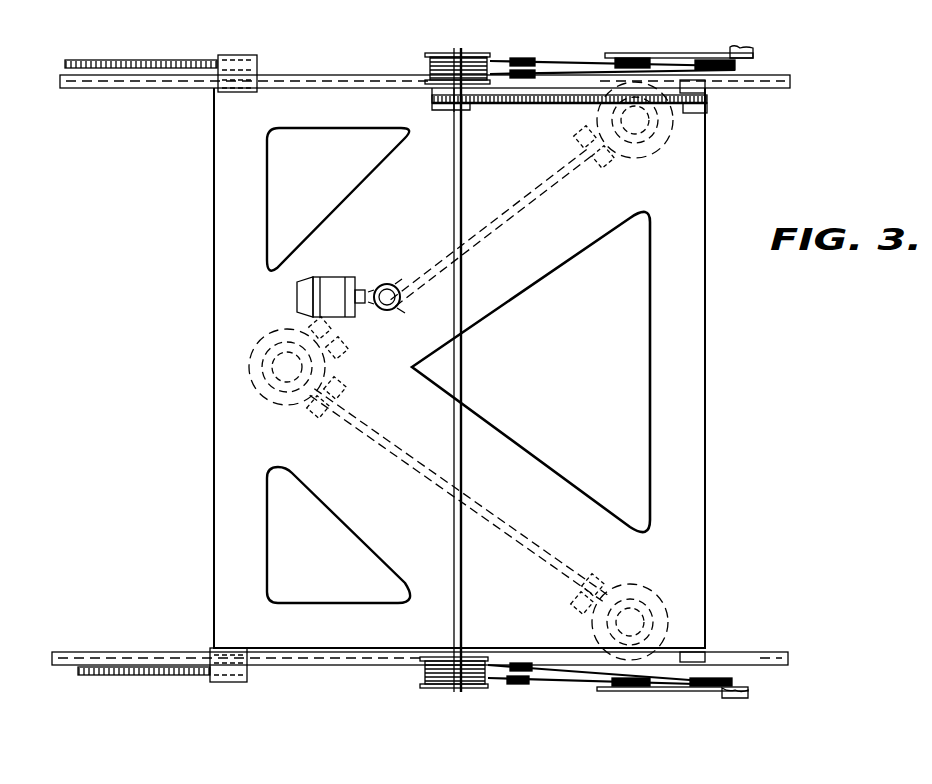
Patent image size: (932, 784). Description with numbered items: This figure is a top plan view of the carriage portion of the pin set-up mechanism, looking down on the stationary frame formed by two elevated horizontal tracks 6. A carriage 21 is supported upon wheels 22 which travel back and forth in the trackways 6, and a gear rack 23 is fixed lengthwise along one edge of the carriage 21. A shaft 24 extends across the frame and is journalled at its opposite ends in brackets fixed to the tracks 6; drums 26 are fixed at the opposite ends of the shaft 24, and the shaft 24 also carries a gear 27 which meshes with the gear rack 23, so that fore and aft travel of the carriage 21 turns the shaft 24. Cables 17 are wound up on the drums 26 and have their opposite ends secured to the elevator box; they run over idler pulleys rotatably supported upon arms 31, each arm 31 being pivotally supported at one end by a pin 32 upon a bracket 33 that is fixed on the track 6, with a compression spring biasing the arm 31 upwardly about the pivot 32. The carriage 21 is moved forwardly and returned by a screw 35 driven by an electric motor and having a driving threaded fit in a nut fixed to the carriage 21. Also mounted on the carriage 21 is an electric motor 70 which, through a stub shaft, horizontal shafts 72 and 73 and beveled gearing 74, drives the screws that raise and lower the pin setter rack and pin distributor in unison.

The horizontal tracks 6 is at (328, 77).
The cables 17 is at (572, 70).
The carriage 21 is at (650, 318).
The wheels 22 is at (216, 90).
The gear rack 23 is at (548, 106).
The shaft 24 is at (458, 362).
The drums 26 is at (480, 53).
The gear 27 is at (462, 98).
The arms 31 is at (663, 33).
The pins 32 is at (737, 682).
The brackets 33 is at (747, 700).
The screw 35 is at (124, 42).
The electric motor 70 is at (330, 285).
The horizontal shaft 72 is at (497, 220).
The horizontal shaft 73 is at (490, 510).
The beveled gearing 74 is at (625, 163).